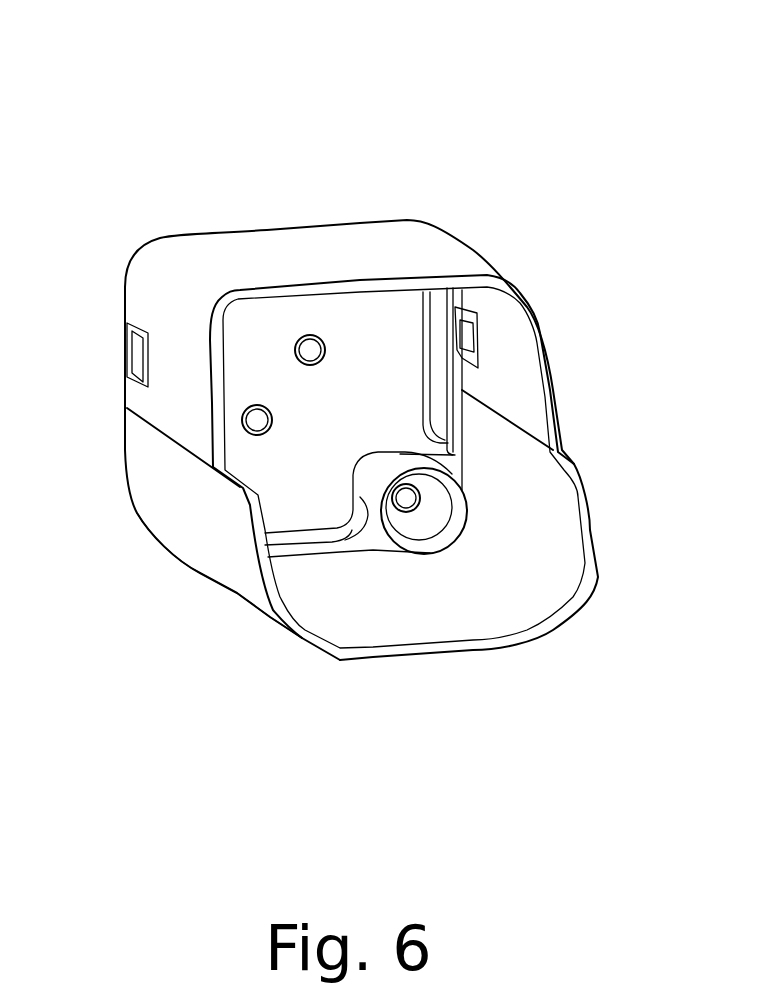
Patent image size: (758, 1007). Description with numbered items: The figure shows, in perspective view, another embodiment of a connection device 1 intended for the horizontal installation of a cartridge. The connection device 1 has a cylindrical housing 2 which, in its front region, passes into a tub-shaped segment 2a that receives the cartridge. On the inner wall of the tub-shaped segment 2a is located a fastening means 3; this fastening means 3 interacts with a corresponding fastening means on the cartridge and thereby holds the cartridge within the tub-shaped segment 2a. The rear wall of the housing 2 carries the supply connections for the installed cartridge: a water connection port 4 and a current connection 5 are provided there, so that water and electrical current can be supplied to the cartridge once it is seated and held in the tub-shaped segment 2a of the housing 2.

The connection device 1 is at (553, 188).
The housing 2 is at (182, 270).
The tub-shaped segment 2a is at (245, 586).
The fastening means 3 is at (473, 333).
The water connection port 4 is at (382, 483).
The current connection 5 is at (318, 343).